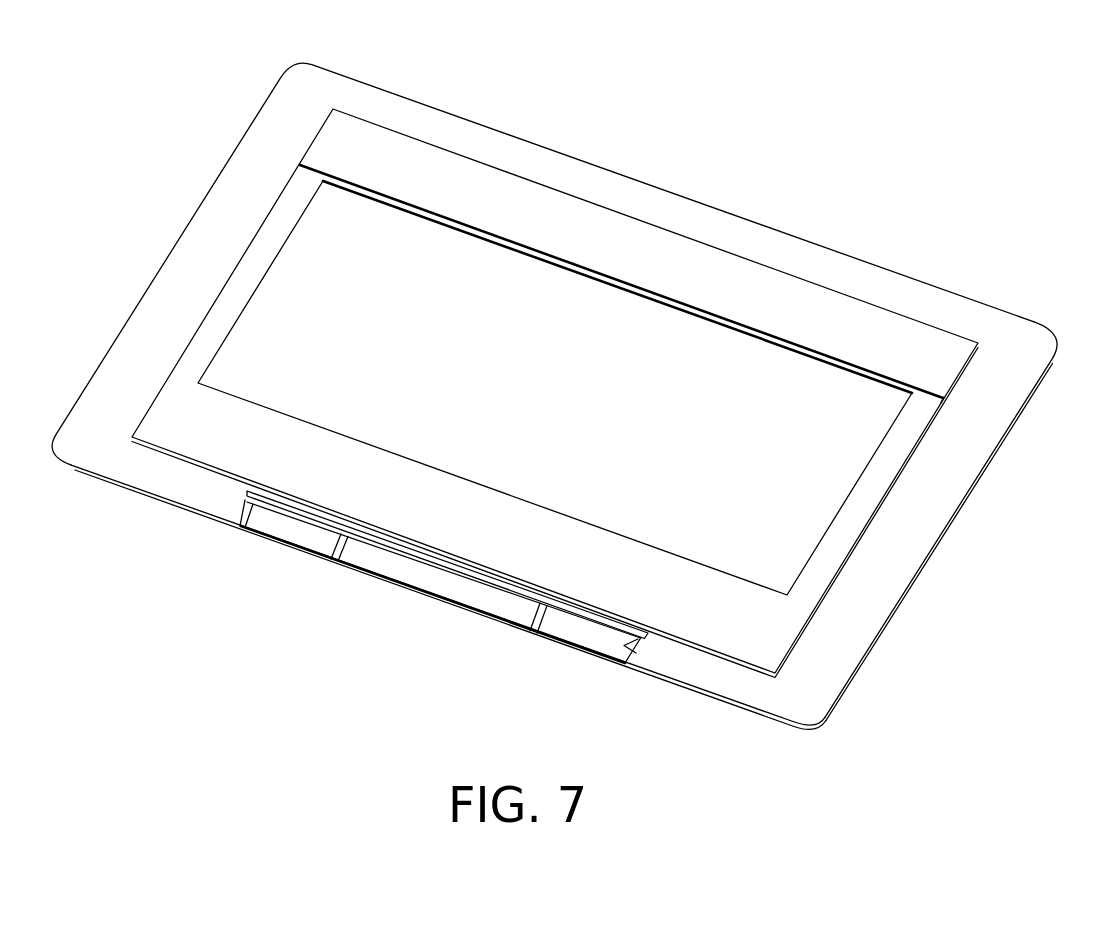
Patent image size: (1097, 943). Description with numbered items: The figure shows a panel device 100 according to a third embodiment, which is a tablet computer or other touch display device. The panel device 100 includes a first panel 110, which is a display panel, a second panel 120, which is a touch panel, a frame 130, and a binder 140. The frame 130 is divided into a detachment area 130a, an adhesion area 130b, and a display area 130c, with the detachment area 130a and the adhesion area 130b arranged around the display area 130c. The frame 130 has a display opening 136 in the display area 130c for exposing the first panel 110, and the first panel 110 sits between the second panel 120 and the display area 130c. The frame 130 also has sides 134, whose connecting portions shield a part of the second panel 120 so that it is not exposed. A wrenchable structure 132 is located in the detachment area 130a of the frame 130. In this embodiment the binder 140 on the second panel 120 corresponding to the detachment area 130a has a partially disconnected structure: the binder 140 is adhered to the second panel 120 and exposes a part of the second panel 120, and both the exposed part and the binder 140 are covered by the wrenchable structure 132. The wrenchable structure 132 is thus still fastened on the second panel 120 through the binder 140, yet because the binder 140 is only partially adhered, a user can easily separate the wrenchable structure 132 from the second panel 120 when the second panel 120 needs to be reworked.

The panel device 100 is at (736, 166).
The first panel 110 is at (862, 445).
The second panel 120 is at (338, 541).
The frame 130 is at (1073, 572).
The detachment area 130a is at (645, 648).
The adhesion area 130b is at (857, 613).
The display area 130c is at (860, 509).
The wrenchable structure 132 is at (252, 528).
The sides 134 is at (247, 493).
The display opening 136 is at (873, 383).
The binder 140 is at (278, 518).